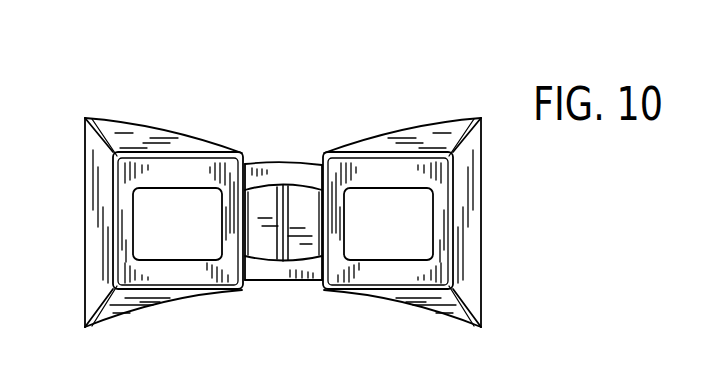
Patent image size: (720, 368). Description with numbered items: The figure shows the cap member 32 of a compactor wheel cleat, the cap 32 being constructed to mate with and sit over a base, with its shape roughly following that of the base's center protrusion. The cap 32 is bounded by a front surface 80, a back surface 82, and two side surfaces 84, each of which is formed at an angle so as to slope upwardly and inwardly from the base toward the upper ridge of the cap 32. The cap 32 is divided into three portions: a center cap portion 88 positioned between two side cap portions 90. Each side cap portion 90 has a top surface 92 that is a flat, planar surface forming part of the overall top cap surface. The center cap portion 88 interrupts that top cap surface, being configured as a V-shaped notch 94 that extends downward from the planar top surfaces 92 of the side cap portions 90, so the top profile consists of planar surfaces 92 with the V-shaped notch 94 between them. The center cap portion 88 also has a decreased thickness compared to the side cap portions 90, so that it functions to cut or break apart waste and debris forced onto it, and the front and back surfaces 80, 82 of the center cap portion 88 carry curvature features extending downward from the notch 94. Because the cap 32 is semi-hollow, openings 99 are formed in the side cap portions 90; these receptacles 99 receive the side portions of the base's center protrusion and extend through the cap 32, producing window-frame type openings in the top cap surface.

The cap member 32 is at (519, 43).
The front surface 80 is at (399, 78).
The back surface 82 is at (251, 320).
The side surfaces 84 is at (85, 222).
The center cap portion 88 is at (294, 88).
The side cap portions 90 is at (136, 108).
The top surface 92 is at (172, 165).
The V-shaped notch 94 is at (264, 203).
The openings 99 is at (192, 237).